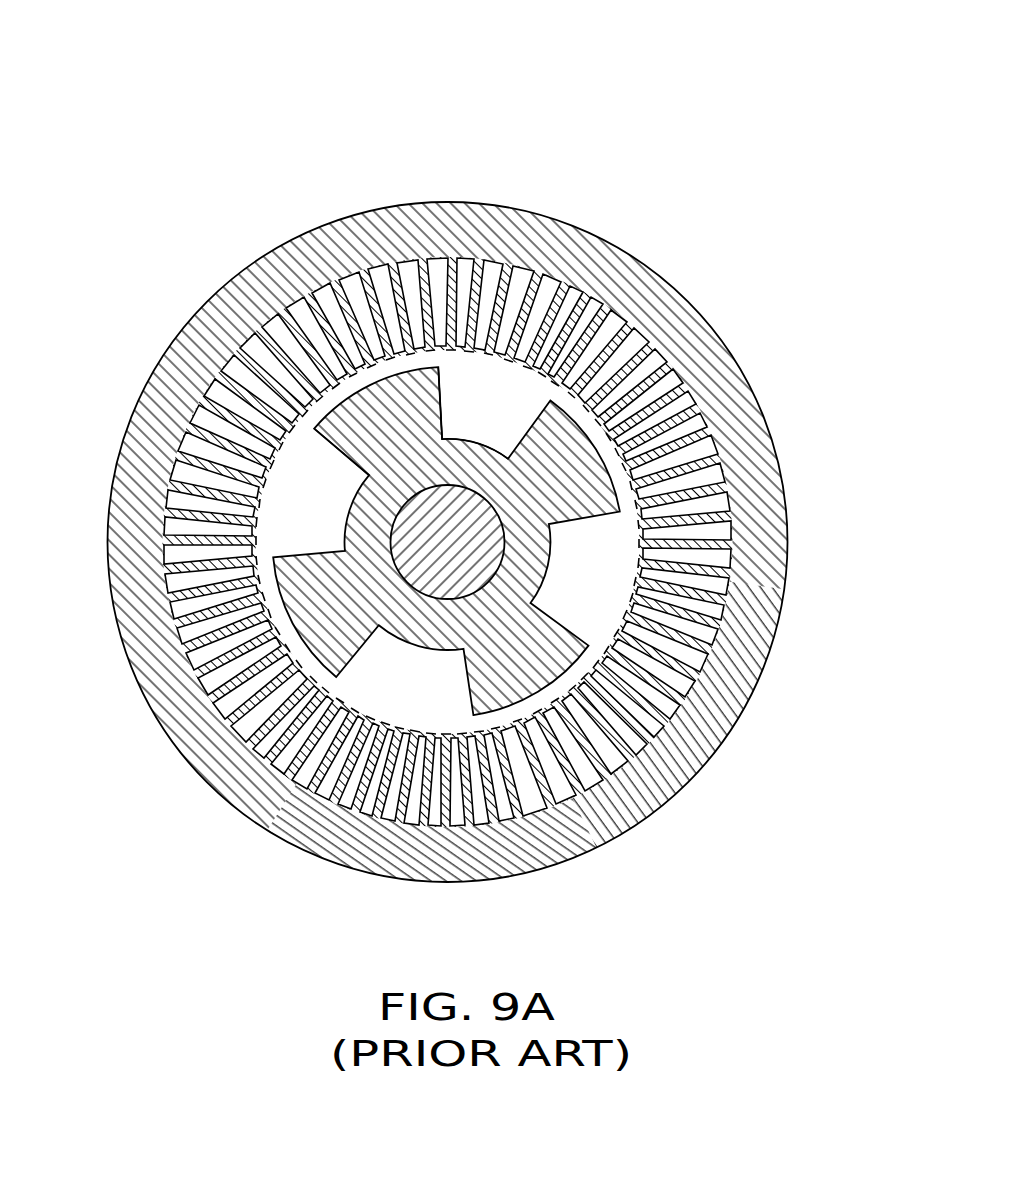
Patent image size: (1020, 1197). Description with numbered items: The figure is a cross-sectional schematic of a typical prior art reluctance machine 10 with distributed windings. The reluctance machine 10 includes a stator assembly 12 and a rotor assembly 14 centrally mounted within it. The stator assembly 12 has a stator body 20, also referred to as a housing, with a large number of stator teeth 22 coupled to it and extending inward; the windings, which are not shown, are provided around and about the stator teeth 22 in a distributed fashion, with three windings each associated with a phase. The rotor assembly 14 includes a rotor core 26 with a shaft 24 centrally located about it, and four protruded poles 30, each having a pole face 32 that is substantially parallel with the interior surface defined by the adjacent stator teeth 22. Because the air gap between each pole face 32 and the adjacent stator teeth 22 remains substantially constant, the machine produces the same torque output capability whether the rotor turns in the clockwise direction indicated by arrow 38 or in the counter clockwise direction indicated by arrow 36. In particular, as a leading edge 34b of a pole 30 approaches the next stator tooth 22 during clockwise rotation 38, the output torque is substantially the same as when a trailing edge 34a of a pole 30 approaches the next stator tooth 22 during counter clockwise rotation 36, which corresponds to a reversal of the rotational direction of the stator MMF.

The reluctance machine 10 is at (232, 155).
The stator assembly 12 is at (715, 286).
The rotor assembly 14 is at (540, 322).
The stator body 20 is at (750, 393).
The stator teeth 22 is at (472, 413).
The shaft 24 is at (506, 556).
The rotor core 26 is at (510, 375).
The protruded poles 30 is at (557, 617).
The pole face 32 is at (363, 390).
The trailing edge 34a is at (313, 428).
The leading edge 34b is at (447, 395).
The counter clockwise rotational direction 36 is at (333, 468).
The clockwise rotational direction 38 is at (440, 685).